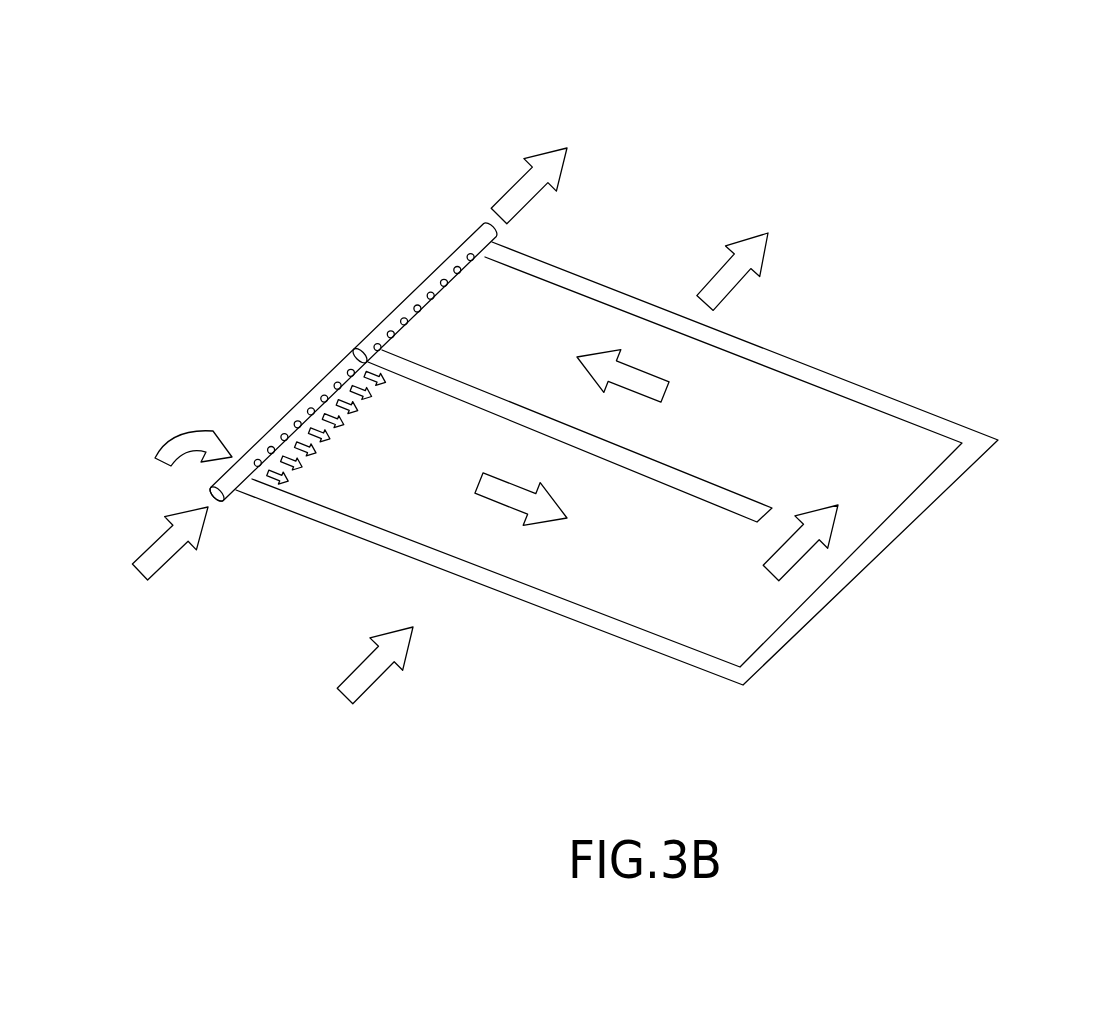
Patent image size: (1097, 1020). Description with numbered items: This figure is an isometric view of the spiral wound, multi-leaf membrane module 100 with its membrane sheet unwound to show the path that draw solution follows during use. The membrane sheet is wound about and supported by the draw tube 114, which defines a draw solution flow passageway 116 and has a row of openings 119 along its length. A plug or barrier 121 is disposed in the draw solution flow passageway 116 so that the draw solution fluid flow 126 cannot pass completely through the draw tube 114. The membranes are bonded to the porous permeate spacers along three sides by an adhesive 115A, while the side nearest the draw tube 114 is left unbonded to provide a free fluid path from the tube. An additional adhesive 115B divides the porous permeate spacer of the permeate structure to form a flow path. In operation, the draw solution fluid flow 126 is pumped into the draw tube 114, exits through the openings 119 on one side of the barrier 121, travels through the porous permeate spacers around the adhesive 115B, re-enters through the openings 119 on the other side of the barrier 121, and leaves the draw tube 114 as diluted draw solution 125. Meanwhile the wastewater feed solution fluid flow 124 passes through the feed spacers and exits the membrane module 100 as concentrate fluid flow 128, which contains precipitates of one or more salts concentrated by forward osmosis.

The membrane module 100 is at (958, 116).
The draw tube 114 is at (286, 421).
The adhesive 115A is at (378, 537).
The additional adhesive 115B is at (682, 482).
The draw solution flow passageway 116 is at (225, 498).
The openings 119 is at (450, 258).
The barrier 121 is at (373, 343).
The wastewater feed solution fluid flow 124 is at (373, 667).
The diluted draw solution 125 is at (548, 150).
The draw solution fluid flow 126 is at (165, 553).
The concentrate fluid flow 128 is at (723, 287).